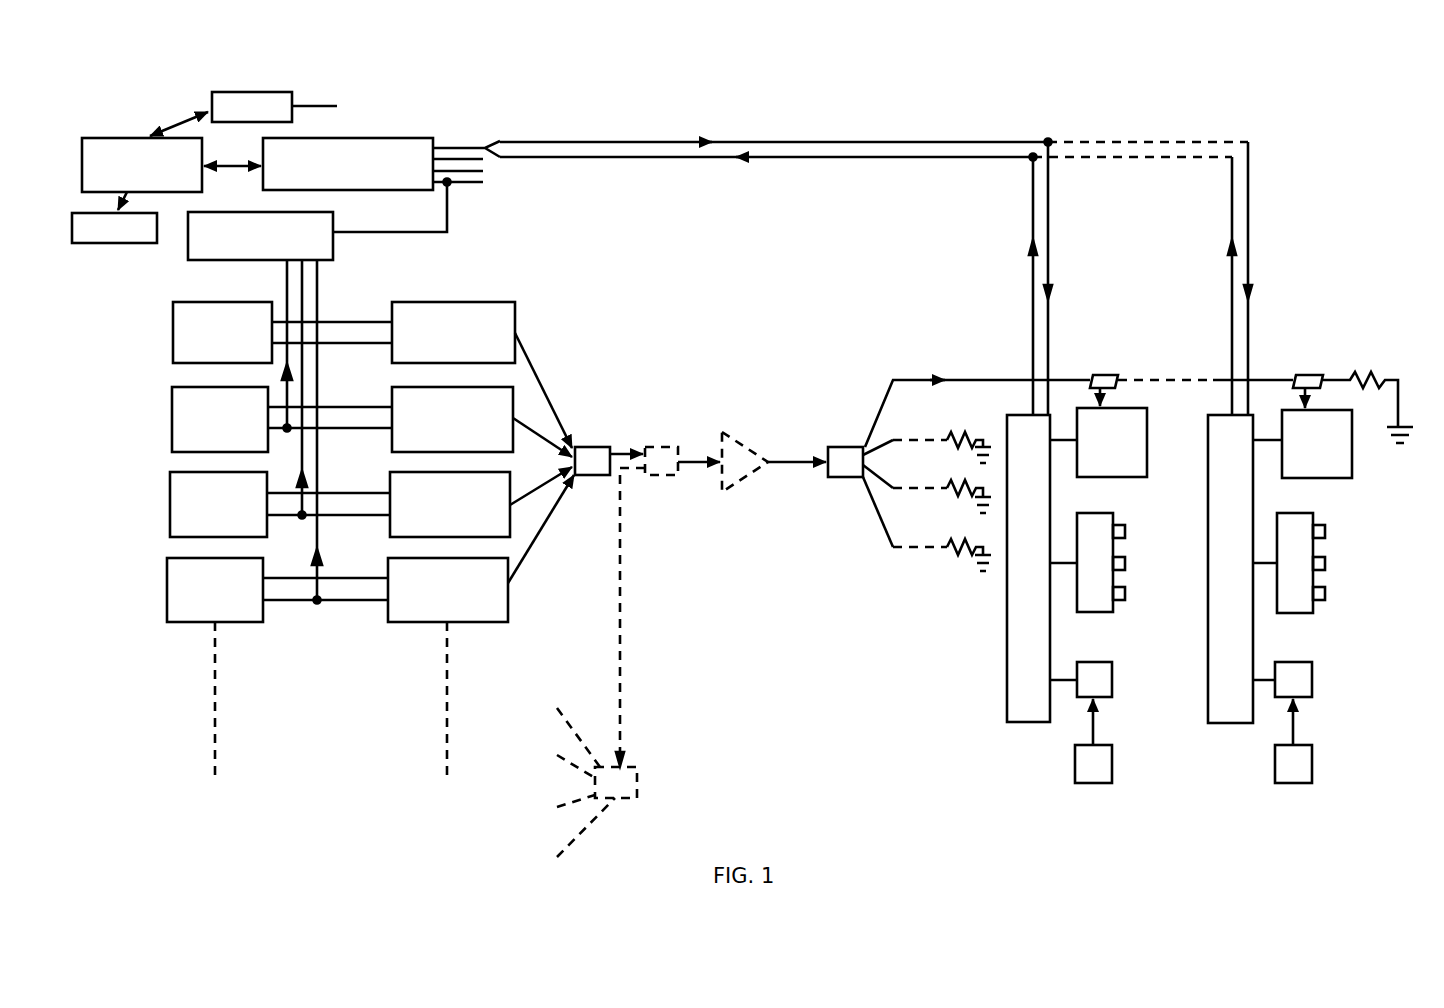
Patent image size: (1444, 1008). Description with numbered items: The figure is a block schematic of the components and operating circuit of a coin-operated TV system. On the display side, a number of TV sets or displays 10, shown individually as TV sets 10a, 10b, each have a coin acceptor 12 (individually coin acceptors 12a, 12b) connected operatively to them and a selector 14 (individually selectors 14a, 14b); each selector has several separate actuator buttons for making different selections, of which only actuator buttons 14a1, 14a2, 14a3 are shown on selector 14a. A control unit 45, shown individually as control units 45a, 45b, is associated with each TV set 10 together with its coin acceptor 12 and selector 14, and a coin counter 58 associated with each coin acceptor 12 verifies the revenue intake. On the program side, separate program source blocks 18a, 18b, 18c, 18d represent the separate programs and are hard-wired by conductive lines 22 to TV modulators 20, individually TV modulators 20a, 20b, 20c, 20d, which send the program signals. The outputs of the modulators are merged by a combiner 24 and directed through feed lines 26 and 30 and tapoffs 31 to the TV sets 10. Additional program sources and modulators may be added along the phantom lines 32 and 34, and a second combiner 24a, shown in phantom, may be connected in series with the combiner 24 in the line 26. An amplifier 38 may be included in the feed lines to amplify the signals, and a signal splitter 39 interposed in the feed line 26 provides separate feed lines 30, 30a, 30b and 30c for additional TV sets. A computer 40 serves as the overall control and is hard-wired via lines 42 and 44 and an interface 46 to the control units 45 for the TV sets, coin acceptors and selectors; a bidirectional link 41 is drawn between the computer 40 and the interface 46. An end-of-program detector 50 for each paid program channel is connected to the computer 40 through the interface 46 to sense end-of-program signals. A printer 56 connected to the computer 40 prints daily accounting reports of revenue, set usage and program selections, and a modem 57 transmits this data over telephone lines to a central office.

The TV set 10 is at (1130, 405).
The TV set 10a is at (1147, 437).
The TV set 10b is at (1352, 455).
The coin acceptor 12 is at (1118, 660).
The coin acceptor 12a is at (1112, 685).
The coin acceptor 12b is at (1312, 672).
The selector 14 is at (1100, 505).
The selector 14a is at (1139, 581).
The actuator button 14a1 is at (1125, 532).
The actuator button 14a2 is at (1125, 563).
The actuator button 14a3 is at (1125, 592).
The selector 14b is at (1300, 613).
The program source block 18a is at (173, 330).
The program source block 18b is at (172, 415).
The program source block 18c is at (170, 500).
The program source block 18d is at (167, 595).
The TV modulator 20 is at (462, 292).
The TV modulator 20a is at (392, 352).
The TV modulator 20b is at (392, 440).
The TV modulator 20c is at (390, 525).
The TV modulator 20d is at (388, 610).
The conductive lines 22 is at (297, 582).
The combiner 24 is at (595, 477).
The second combiner 24a is at (663, 475).
The feed line 26 is at (684, 455).
The feed line 30 is at (912, 380).
The feed line 30a is at (903, 438).
The feed line 30b is at (903, 488).
The feed line 30c is at (903, 545).
The tapoff 31 is at (1108, 375).
The phantom lines 32 is at (215, 733).
The phantom lines 34 is at (447, 737).
The amplifier 38 is at (745, 480).
The signal splitter 39 is at (843, 447).
The computer 40 is at (113, 138).
The bidirectional link 41 is at (233, 172).
The line 42 is at (770, 142).
The line 44 is at (810, 157).
The control unit 45 is at (1257, 403).
The control unit 45a is at (1020, 723).
The control unit 45b is at (1230, 723).
The interface 46 is at (373, 138).
The end-of-program detector 50 is at (207, 260).
The printer 56 is at (100, 243).
The modem 57 is at (247, 92).
The coin counter 58 is at (1112, 755).